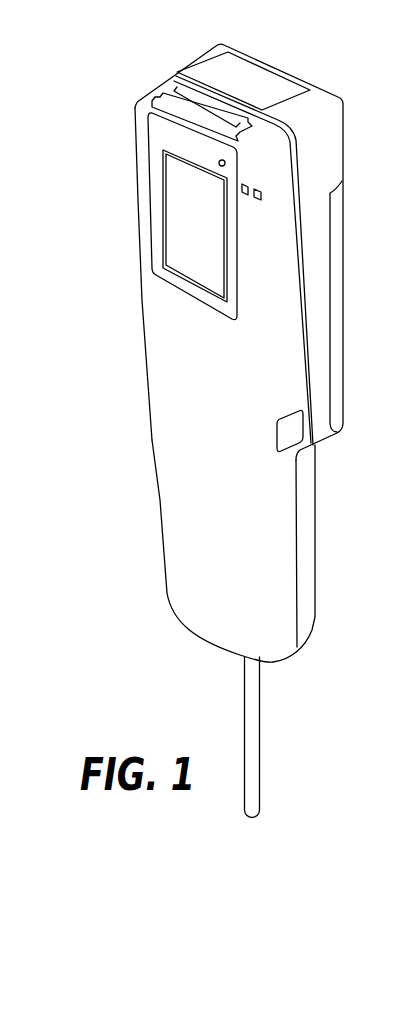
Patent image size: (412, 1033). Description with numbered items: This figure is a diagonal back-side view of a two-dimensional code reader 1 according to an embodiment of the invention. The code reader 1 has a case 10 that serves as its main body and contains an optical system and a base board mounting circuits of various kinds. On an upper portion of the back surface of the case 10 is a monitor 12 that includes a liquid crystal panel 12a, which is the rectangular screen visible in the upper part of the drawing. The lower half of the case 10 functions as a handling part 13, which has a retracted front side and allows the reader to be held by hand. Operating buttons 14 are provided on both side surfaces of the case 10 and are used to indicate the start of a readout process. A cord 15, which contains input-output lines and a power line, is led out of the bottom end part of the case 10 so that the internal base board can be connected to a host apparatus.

The two-dimensional code reader 1 is at (340, 62).
The case 10 is at (163, 375).
The monitor 12 is at (157, 188).
The liquid crystal panel 12a is at (186, 224).
The handling part 13 is at (185, 484).
The operating buttons 14 is at (292, 438).
The cord 15 is at (253, 728).